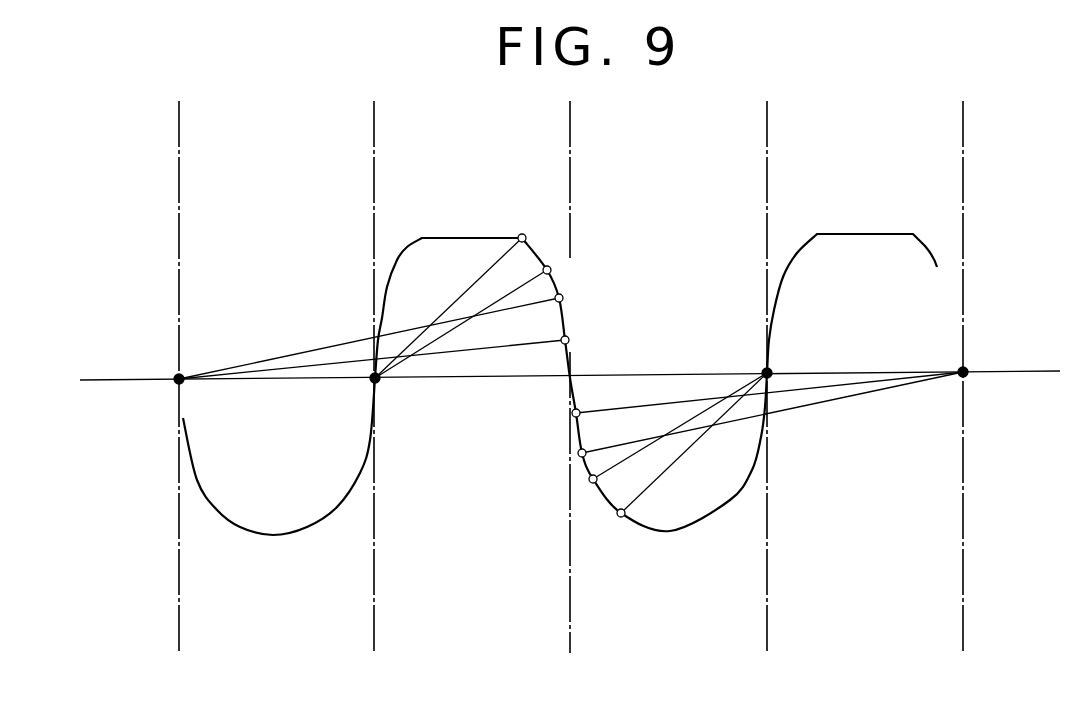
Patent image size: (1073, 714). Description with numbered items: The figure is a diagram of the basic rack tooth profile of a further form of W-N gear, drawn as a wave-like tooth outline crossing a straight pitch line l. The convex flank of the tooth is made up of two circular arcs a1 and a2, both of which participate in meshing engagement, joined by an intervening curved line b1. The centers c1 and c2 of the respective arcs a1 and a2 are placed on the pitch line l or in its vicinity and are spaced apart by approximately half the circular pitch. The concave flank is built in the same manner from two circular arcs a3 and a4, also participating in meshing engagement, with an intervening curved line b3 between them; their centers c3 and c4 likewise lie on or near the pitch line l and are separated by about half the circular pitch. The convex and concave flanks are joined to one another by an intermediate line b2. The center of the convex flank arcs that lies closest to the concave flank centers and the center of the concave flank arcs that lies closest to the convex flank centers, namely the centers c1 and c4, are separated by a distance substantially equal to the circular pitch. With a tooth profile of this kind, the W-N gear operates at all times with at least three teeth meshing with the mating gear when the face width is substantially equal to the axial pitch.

The pitch line l is at (570, 364).
The center of circular arc a1 c1 is at (362, 389).
The center of circular arc a2 c2 is at (162, 370).
The center of circular arc a3 c3 is at (948, 362).
The center of circular arc a4 c4 is at (751, 365).
The circular arc of convex flank a1 is at (541, 248).
The intervening curved line of convex flank b1 is at (564, 279).
The circular arc of convex flank a2 is at (575, 311).
The intermediate line b2 is at (582, 354).
The circular arc of concave flank a3 is at (562, 425).
The intervening curved line of concave flank b3 is at (571, 463).
The circular arc of concave flank a4 is at (600, 503).